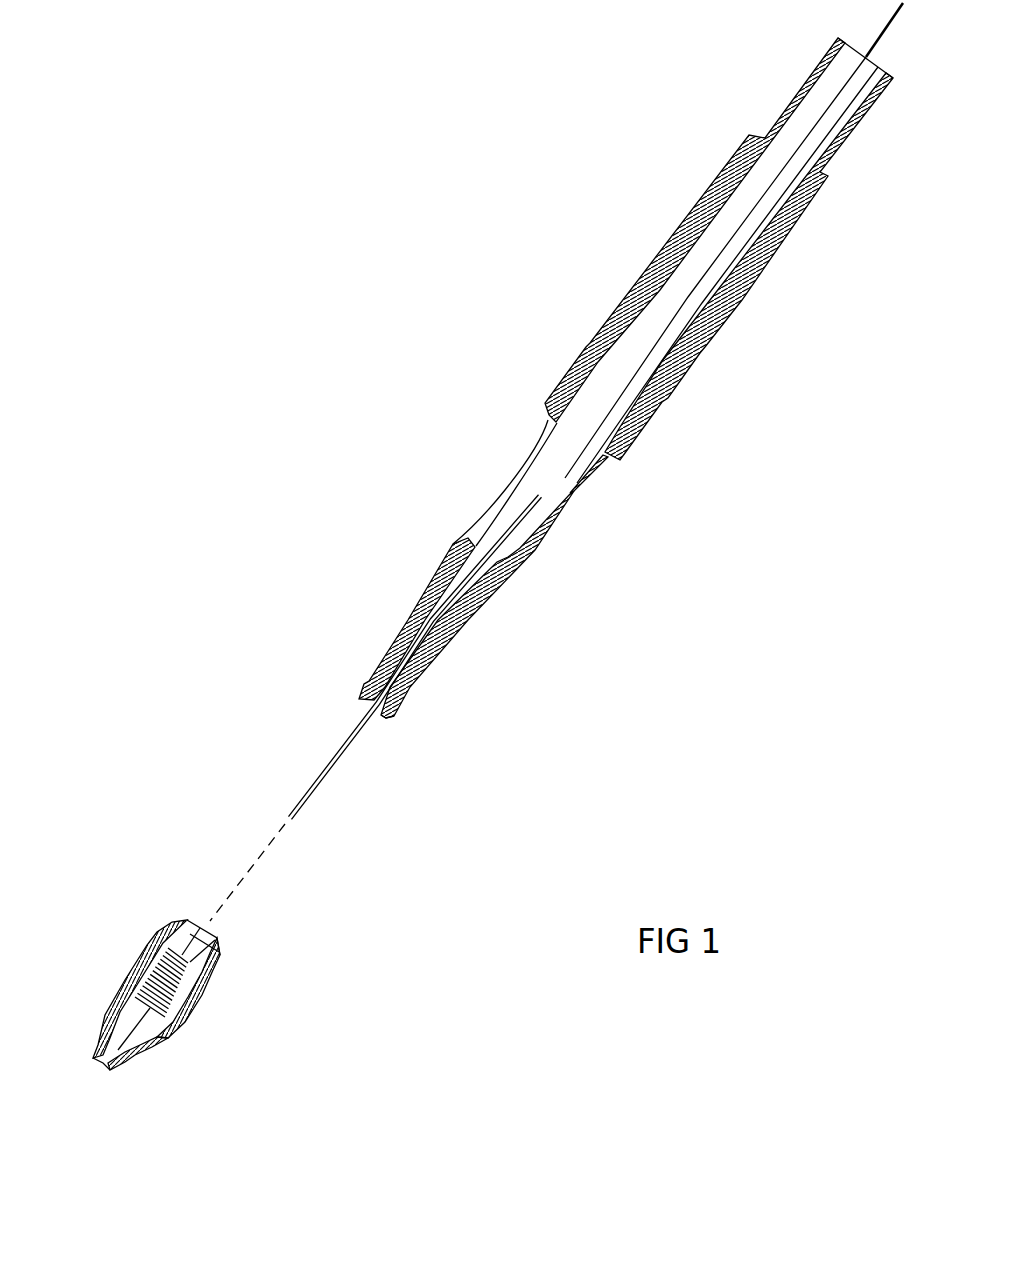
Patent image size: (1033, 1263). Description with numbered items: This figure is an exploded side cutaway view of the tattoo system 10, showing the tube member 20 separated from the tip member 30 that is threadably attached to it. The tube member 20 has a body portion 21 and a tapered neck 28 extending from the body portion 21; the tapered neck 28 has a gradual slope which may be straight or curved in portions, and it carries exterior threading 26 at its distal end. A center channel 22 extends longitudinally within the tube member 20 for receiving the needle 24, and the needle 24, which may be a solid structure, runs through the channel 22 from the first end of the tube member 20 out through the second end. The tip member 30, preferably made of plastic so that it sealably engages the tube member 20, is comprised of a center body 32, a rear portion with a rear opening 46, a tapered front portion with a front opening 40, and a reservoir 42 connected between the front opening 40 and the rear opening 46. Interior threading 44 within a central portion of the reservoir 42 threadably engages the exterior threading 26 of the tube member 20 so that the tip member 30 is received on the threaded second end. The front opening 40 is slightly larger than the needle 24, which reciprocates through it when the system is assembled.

The tattoo system 10 is at (360, 270).
The tube member 20 is at (553, 533).
The body portion 21 is at (649, 264).
The center channel 22 is at (453, 544).
The needle 24 is at (329, 769).
The exterior threading 26 is at (397, 709).
The tapered neck 28 is at (416, 607).
The tip member 30 is at (215, 982).
The center body 32 is at (114, 992).
The front opening 40 is at (105, 1070).
The reservoir 42 is at (168, 1040).
The interior threading 44 is at (133, 945).
The rear opening 46 is at (181, 921).